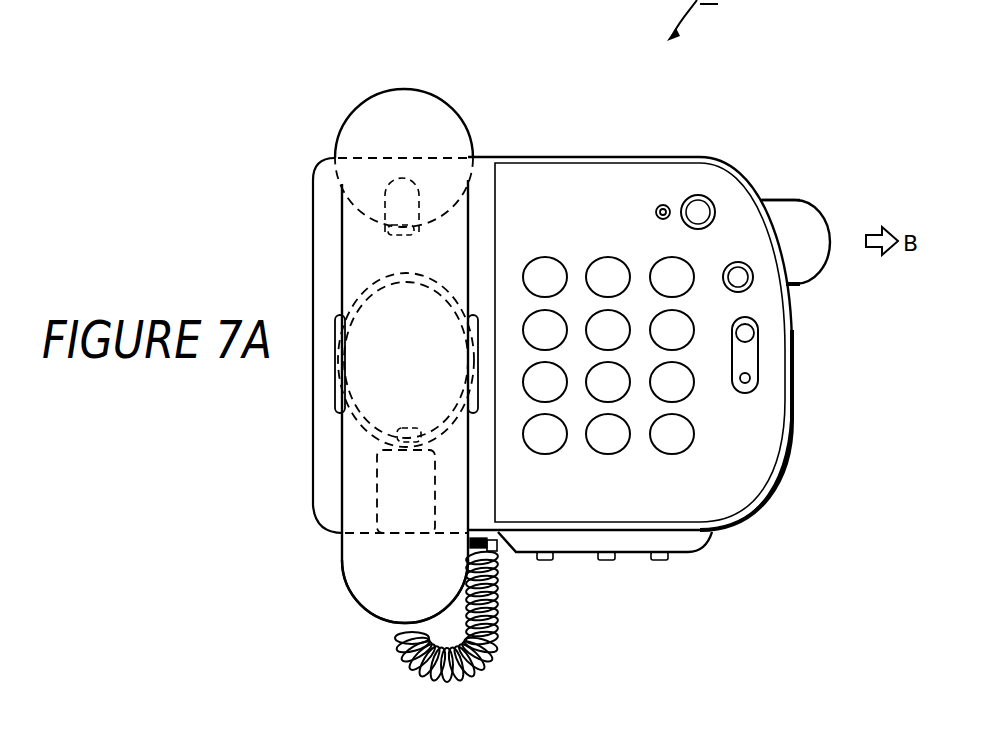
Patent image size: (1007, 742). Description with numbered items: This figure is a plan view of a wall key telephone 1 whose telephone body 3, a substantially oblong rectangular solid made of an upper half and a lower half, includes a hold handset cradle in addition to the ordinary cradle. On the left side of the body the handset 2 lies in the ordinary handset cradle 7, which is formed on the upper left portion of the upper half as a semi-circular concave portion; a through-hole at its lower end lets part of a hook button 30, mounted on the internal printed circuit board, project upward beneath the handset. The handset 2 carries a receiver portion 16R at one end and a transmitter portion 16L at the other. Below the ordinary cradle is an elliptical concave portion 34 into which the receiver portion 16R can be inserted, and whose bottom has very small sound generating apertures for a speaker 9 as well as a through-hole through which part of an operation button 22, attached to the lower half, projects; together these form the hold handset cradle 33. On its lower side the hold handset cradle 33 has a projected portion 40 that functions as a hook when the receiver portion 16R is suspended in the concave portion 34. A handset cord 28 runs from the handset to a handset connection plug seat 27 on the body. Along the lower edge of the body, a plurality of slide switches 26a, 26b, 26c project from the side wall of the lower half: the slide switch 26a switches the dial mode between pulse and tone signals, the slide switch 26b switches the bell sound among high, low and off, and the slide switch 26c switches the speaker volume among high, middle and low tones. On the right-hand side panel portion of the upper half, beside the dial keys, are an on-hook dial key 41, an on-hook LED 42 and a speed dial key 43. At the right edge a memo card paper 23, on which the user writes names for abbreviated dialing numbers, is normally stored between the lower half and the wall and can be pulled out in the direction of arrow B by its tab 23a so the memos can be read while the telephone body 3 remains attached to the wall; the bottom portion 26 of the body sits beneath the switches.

The key telephone 1 is at (699, 708).
The handset 2 is at (362, 548).
The telephone body 3 is at (788, 413).
The ordinary handset cradle 7 is at (365, 363).
The speaker 9 is at (695, 382).
The receiver portion 16R is at (366, 112).
The transmitter portion 16L is at (392, 612).
The operation button 22 is at (400, 432).
The memo card paper 23 is at (805, 258).
The tab 23a is at (777, 208).
The bottom portion 26 is at (605, 637).
The dial mode switching slide switch 26a is at (545, 562).
The bell sound switching slide switch 26b is at (605, 562).
The speaker volume switching slide switch 26c is at (660, 562).
The handset connection plug seat 27 is at (497, 550).
The handset cord 28 is at (448, 686).
The hook button 30 is at (413, 183).
The hold handset cradle 33 is at (340, 320).
The elliptical concave portion 34 is at (480, 275).
The projected portion 40 is at (400, 492).
The on-hook dial key 41 is at (702, 208).
The on-hook LED 42 is at (664, 204).
The speed dial key 43 is at (757, 331).